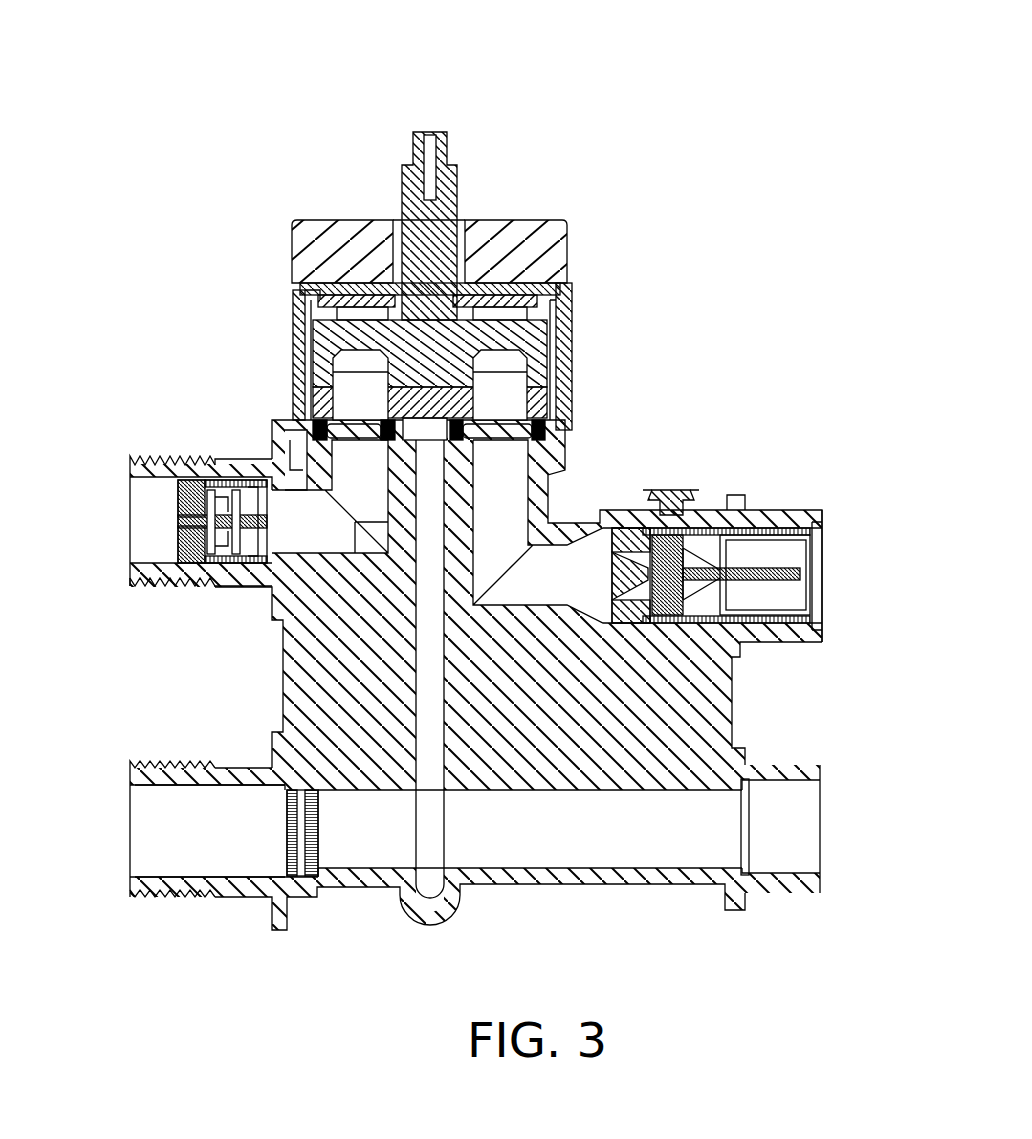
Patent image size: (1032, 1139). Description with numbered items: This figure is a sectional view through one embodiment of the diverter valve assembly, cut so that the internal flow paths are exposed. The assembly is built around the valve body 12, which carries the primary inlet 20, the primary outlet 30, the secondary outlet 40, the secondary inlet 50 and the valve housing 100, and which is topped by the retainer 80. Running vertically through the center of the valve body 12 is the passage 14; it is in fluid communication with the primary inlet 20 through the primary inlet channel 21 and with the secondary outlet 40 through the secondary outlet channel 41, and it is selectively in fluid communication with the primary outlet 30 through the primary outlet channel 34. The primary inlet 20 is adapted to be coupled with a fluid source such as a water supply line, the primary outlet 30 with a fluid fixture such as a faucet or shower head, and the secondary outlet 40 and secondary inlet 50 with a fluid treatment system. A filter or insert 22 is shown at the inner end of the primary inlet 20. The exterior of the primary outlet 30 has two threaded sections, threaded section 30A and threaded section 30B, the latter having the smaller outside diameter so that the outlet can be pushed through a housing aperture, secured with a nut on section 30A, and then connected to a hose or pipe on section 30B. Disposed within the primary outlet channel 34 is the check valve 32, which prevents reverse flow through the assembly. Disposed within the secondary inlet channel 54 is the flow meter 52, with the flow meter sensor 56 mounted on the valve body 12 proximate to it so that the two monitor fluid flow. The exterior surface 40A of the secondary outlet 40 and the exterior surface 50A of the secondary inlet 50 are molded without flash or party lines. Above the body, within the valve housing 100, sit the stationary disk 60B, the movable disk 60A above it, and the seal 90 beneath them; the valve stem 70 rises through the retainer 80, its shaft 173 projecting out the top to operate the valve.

The valve body 12 is at (276, 700).
The passage 14 is at (432, 830).
The primary inlet 20 is at (128, 830).
The primary inlet channel 21 is at (178, 835).
The inlet filter insert 22 is at (275, 830).
The primary outlet 30 is at (128, 520).
The threaded section 30A is at (198, 590).
The threaded section 30B is at (152, 590).
The check valve 32 is at (178, 500).
The primary outlet channel 34 is at (328, 520).
The secondary outlet 40 is at (822, 828).
The exterior surface 40A is at (752, 768).
The secondary outlet channel 41 is at (625, 830).
The secondary inlet 50 is at (825, 572).
The exterior surface 50A is at (790, 650).
The flow meter 52 is at (750, 565).
The secondary inlet channel 54 is at (500, 545).
The flow meter sensor 56 is at (670, 500).
The movable disk 60A is at (552, 332).
The stationary disk 60B is at (556, 390).
The valve stem 70 is at (450, 128).
The retainer 80 is at (572, 240).
The seal 90 is at (550, 430).
The valve housing 100 is at (290, 355).
The shaft 173 is at (460, 210).